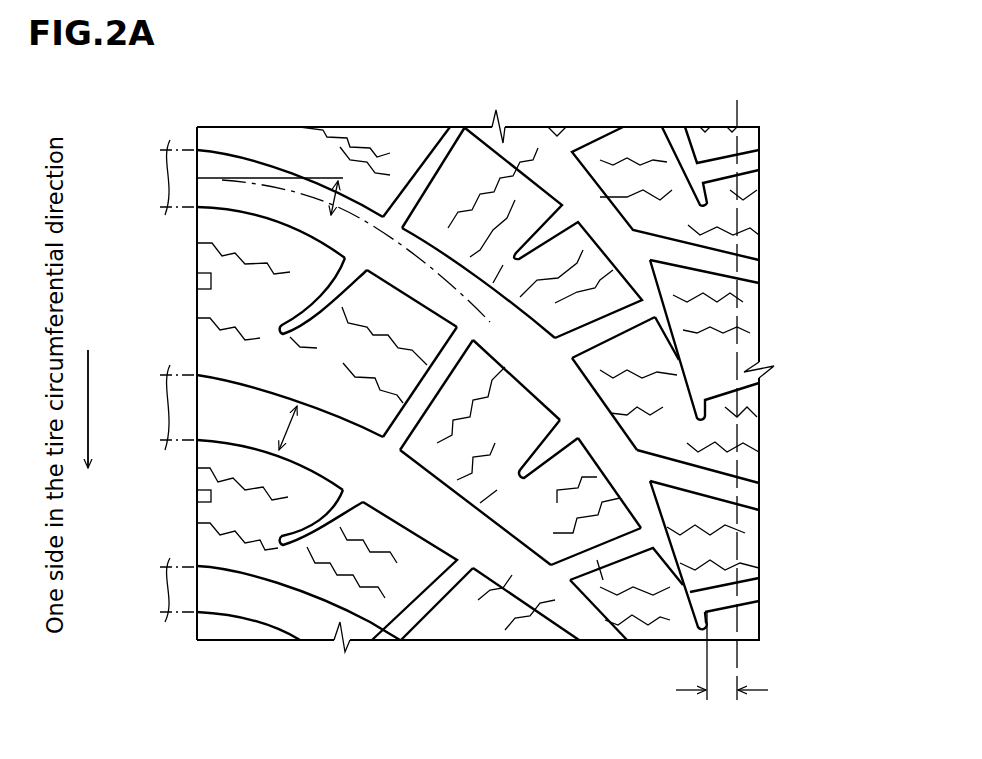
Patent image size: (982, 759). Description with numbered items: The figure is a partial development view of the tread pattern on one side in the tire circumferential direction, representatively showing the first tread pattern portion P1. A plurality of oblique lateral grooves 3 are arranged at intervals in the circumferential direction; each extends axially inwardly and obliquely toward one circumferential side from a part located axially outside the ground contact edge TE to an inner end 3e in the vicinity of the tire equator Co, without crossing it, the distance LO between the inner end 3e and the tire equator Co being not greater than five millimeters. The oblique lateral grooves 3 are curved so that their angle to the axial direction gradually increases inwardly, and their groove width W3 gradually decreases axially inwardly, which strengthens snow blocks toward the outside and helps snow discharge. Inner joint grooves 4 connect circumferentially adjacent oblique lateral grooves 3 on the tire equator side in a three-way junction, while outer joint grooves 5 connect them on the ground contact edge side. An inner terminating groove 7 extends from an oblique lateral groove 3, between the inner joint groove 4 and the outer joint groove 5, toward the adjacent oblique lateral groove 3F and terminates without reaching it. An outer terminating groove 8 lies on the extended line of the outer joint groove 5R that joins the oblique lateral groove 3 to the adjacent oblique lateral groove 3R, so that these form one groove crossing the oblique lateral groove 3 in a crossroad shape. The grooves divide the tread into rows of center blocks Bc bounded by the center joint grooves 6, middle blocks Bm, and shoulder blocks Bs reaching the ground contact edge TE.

The oblique lateral groove 3 is at (237, 199).
The adjacent oblique lateral groove 3F is at (327, 447).
The adjacent oblique lateral groove 3R is at (577, 178).
The inner end 3e is at (713, 626).
The inner joint groove 4 is at (648, 630).
The outer joint groove 5 is at (427, 387).
The outer joint groove 5R is at (414, 168).
The center joint groove 6 is at (702, 482).
The inner terminating groove 7 is at (548, 450).
The outer terminating groove 8 is at (307, 303).
The shoulder block Bs is at (358, 355).
The middle block Bm is at (473, 384).
The center block Bc is at (611, 602).
The tire equator Co is at (737, 385).
The ground contact edge TE is at (197, 540).
The groove width W3 is at (283, 430).
The distance between inner end and tire equator LO is at (722, 669).
The first tread pattern portion P1 is at (508, 108).